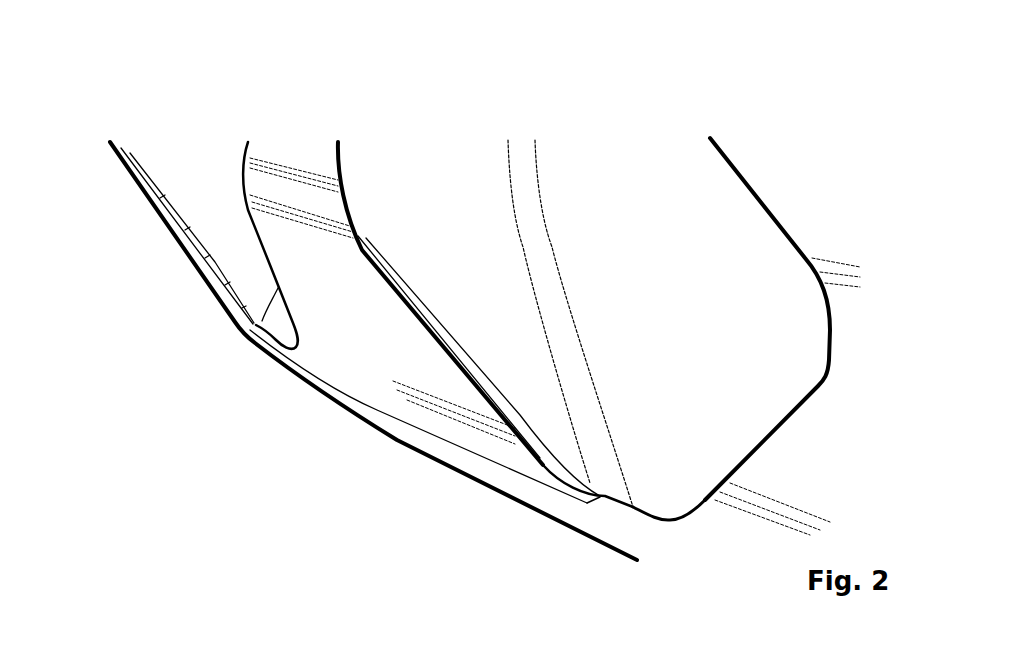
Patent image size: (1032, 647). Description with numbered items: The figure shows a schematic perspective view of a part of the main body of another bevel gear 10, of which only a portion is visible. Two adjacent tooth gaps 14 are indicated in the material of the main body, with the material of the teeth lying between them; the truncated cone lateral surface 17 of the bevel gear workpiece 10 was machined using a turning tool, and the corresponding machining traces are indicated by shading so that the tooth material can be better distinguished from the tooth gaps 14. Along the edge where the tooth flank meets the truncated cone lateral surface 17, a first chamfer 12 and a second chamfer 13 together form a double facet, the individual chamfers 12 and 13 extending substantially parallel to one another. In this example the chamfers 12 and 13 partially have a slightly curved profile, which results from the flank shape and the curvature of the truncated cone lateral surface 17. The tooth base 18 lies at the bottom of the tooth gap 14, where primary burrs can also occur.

The bevel gear 10 is at (91, 35).
The first chamfer 12 is at (368, 243).
The second chamfer 13 is at (468, 382).
The tooth gap 14 is at (178, 133).
The truncated cone lateral surface 17 is at (641, 543).
The tooth base 18 is at (603, 497).